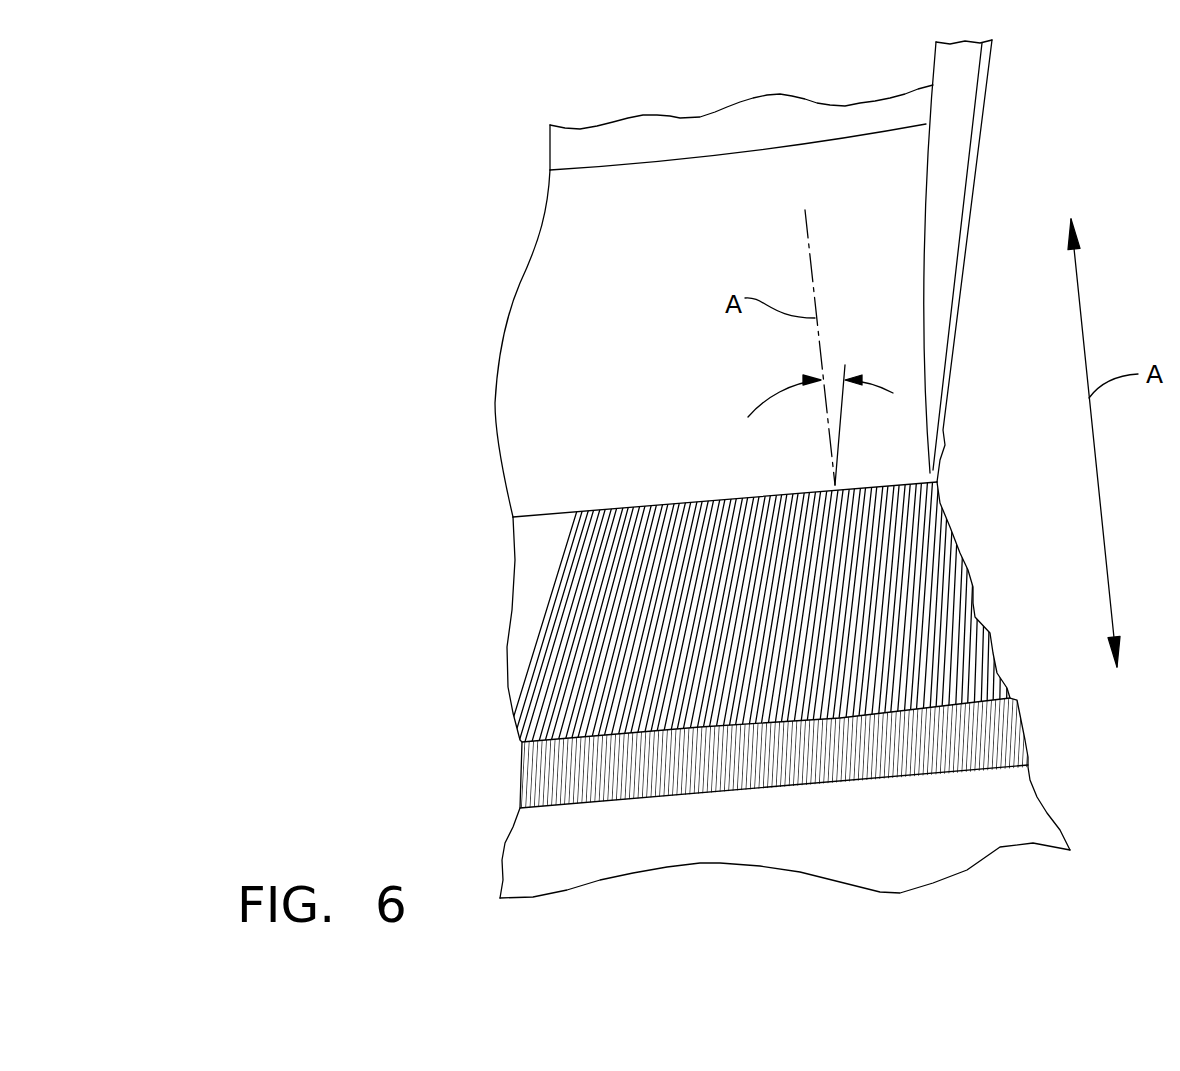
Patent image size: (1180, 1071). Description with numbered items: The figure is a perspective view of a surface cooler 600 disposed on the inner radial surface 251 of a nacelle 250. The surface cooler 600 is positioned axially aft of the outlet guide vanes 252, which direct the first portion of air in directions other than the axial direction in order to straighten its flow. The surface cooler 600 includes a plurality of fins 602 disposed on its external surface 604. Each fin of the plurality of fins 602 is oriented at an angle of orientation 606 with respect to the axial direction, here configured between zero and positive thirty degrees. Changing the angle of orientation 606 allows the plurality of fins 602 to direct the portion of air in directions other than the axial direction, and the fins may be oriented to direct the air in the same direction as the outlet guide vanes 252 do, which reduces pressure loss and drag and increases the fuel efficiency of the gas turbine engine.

The nacelle 250 is at (938, 800).
The inner radial surface 251 is at (668, 197).
The outlet guide vanes 252 is at (954, 80).
The surface cooler 600 is at (632, 835).
The plurality of fins 602 is at (862, 542).
The external surface 604 is at (722, 498).
The angle of orientation 606 is at (775, 393).